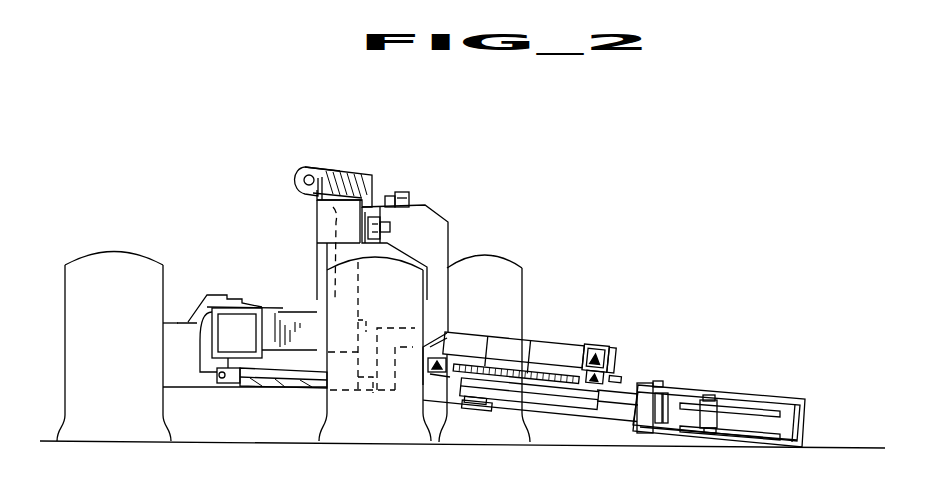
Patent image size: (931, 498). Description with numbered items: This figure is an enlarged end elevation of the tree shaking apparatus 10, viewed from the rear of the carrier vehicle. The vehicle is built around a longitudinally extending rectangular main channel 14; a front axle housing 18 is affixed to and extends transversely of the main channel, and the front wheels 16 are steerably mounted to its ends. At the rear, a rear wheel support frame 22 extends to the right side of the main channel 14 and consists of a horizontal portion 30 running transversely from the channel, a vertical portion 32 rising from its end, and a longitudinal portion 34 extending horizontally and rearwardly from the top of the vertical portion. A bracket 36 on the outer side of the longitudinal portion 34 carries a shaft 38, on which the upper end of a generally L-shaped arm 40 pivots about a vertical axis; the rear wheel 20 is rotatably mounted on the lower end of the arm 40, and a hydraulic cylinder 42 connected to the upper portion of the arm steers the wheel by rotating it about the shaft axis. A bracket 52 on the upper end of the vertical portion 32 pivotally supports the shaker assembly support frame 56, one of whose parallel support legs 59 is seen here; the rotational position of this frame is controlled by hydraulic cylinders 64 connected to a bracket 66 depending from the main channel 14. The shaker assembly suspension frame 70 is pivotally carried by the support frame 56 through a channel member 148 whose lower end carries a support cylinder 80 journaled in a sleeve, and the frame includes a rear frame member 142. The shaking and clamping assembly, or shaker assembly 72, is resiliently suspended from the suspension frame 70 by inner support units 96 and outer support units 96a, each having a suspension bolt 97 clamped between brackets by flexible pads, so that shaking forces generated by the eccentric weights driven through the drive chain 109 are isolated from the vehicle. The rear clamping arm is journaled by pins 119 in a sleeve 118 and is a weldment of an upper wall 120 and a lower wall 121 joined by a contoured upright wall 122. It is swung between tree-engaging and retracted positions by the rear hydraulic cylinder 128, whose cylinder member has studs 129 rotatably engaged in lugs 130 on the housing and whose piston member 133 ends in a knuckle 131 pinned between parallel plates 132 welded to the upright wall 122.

The tree shaking apparatus 10 is at (499, 188).
The main channel 14 is at (209, 302).
The front wheels 16 is at (98, 312).
The front axle housing 18 is at (165, 356).
The rear wheel 20 is at (397, 297).
The rear wheel support frame 22 is at (266, 305).
The horizontal portion 30 is at (311, 314).
The vertical portion 32 is at (320, 265).
The longitudinal portion 34 is at (322, 215).
The bracket 36 is at (379, 203).
The shaft 38 is at (390, 227).
The L-shaped arm 40 is at (448, 225).
The hydraulic cylinder 42 is at (403, 195).
The bracket 52 is at (297, 179).
The shaker assembly support frame 56 is at (353, 169).
The support leg 59 is at (340, 170).
The hydraulic cylinders 64 is at (267, 387).
The bracket 66 is at (207, 378).
The shaker assembly suspension frame 70 is at (590, 336).
The shaker assembly 72 is at (572, 420).
The support cylinder 80 is at (365, 392).
The inner support units 96 is at (445, 340).
The outer support units 96a is at (611, 353).
The suspension bolt 97 is at (598, 349).
The drive chain 109 is at (540, 362).
The sleeve 118 is at (651, 436).
The pins 119 is at (661, 382).
The upper wall 120 is at (790, 398).
The lower wall 121 is at (768, 446).
The upright wall 122 is at (783, 425).
The rear hydraulic cylinder 128 is at (545, 401).
The studs 129 is at (488, 347).
The lugs 130 is at (493, 410).
The knuckle 131 is at (718, 410).
The parallel plates 132 is at (760, 406).
The piston member 133 is at (630, 413).
The rear frame member 142 is at (527, 342).
The channel member 148 is at (393, 398).